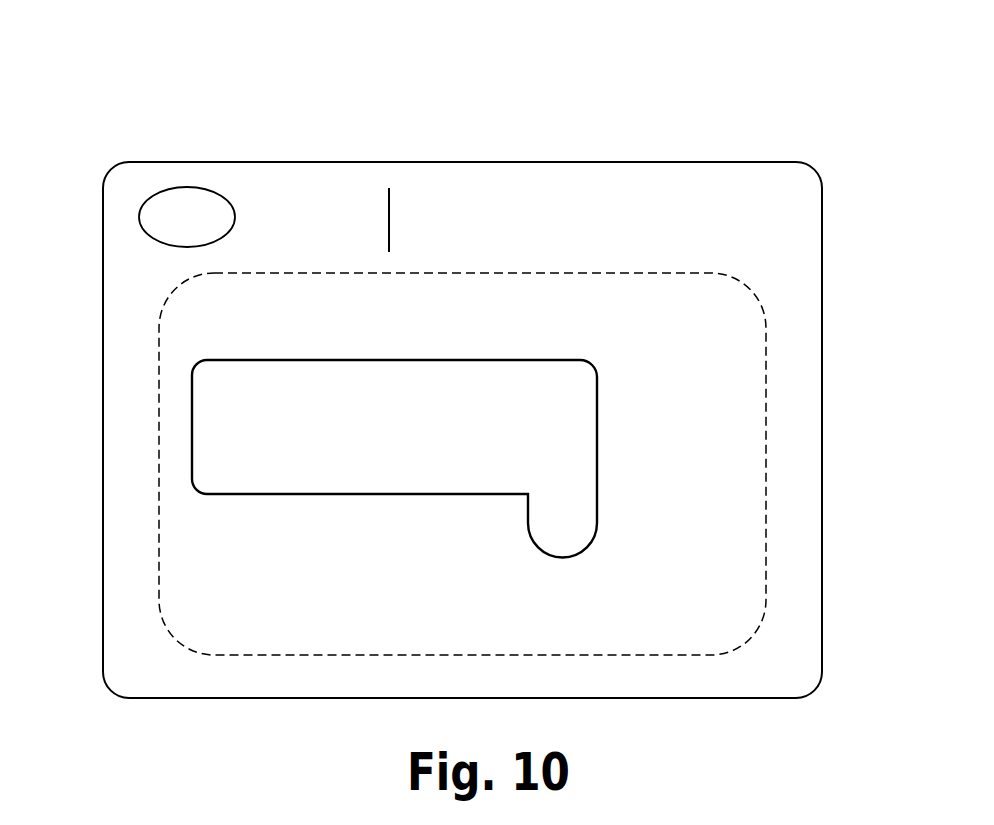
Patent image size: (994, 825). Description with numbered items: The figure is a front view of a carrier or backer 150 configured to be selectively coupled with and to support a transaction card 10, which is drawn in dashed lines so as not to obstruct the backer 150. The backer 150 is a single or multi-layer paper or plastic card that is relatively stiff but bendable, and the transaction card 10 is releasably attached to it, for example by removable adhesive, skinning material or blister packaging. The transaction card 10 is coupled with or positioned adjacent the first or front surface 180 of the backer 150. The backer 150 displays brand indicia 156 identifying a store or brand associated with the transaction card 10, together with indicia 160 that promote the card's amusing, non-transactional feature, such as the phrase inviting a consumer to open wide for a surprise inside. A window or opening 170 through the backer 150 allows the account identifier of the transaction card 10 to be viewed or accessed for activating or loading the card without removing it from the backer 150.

The backer 150 is at (131, 96).
The brand indicia 156 is at (185, 188).
The indicia 160 is at (507, 212).
The transaction card 10 is at (767, 391).
The front surface 180 is at (797, 503).
The opening 170 is at (193, 433).